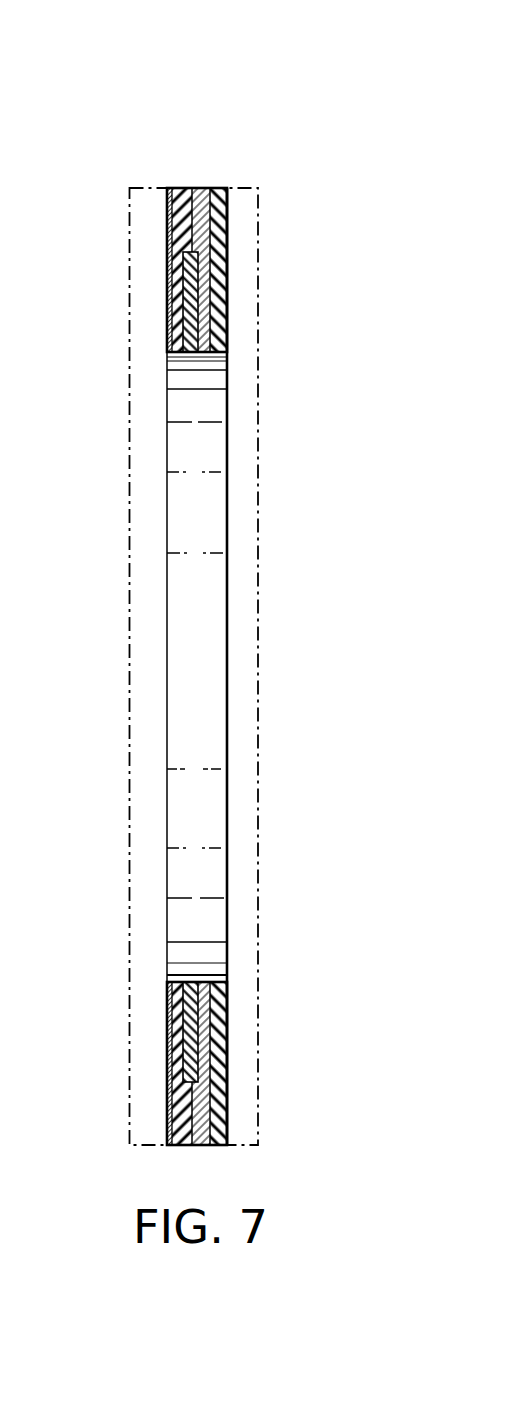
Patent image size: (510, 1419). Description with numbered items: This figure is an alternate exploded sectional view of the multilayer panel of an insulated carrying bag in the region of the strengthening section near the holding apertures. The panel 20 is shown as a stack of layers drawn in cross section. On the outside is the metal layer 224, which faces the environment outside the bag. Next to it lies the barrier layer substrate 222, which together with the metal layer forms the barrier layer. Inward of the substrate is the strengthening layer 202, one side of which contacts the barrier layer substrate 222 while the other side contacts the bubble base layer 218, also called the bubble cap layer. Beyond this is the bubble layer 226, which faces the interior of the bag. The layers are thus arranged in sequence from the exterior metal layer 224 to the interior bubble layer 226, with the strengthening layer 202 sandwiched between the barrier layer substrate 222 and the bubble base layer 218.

The tube 20 is at (204, 660).
The strengthening layer 202 is at (195, 300).
The bubble base layer 218 is at (199, 200).
The barrier layer substrate 222 is at (170, 196).
The metal layer 224 is at (168, 238).
The bubble layer 226 is at (220, 196).